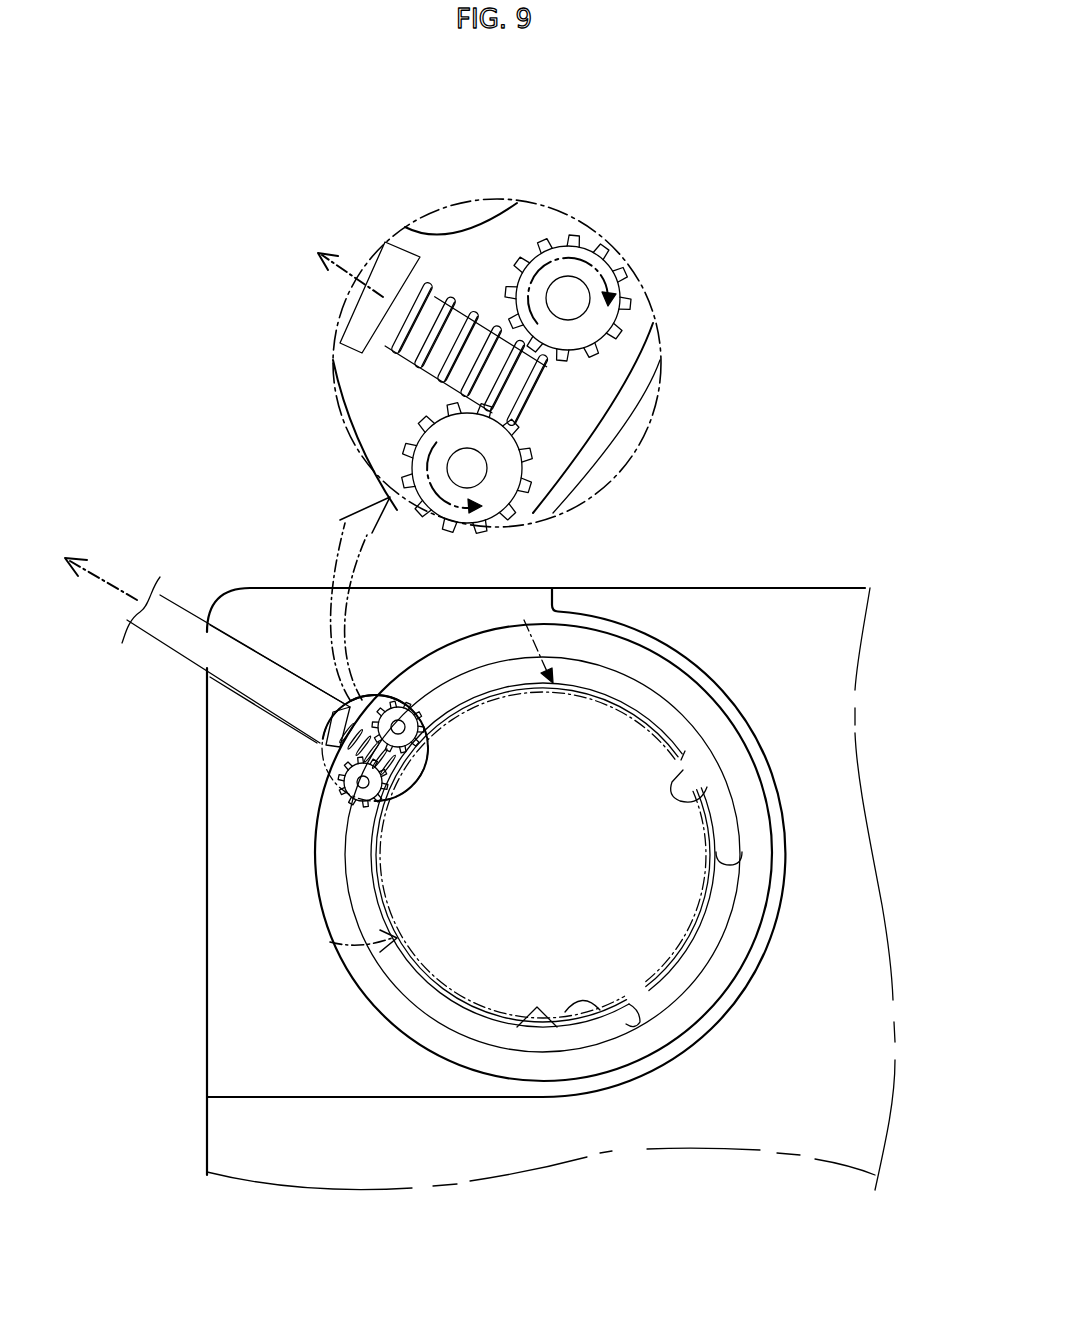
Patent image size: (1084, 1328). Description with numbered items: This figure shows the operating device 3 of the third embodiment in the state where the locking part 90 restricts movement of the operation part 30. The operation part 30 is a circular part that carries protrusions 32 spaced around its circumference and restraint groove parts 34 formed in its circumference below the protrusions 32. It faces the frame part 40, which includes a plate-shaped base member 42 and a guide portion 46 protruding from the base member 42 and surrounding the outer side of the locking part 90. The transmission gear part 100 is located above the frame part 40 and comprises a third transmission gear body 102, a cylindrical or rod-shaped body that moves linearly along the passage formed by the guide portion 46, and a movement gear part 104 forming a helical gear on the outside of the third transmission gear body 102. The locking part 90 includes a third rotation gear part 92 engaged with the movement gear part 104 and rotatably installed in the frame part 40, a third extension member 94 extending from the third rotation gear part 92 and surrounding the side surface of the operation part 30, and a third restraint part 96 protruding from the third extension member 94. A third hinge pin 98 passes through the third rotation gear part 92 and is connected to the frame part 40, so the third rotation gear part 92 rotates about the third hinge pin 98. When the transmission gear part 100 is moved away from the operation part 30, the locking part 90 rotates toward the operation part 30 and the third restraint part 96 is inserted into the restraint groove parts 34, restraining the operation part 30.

The operating device 3 is at (728, 366).
The operation part 30 is at (600, 884).
The protrusions 32 is at (457, 1005).
The restraint groove parts 34 is at (600, 1003).
The frame part 40 is at (174, 860).
The base member 42 is at (395, 1012).
The guide portion 46 is at (232, 962).
The locking part 90 is at (712, 718).
The third rotation gear part 92 is at (585, 252).
The third extension member 94 is at (635, 693).
The third restraint part 96 is at (707, 800).
The third hinge pin 98 is at (465, 468).
The transmission gear part 100 is at (146, 676).
The third transmission gear body 102 is at (153, 612).
The movement gear part 104 is at (447, 288).